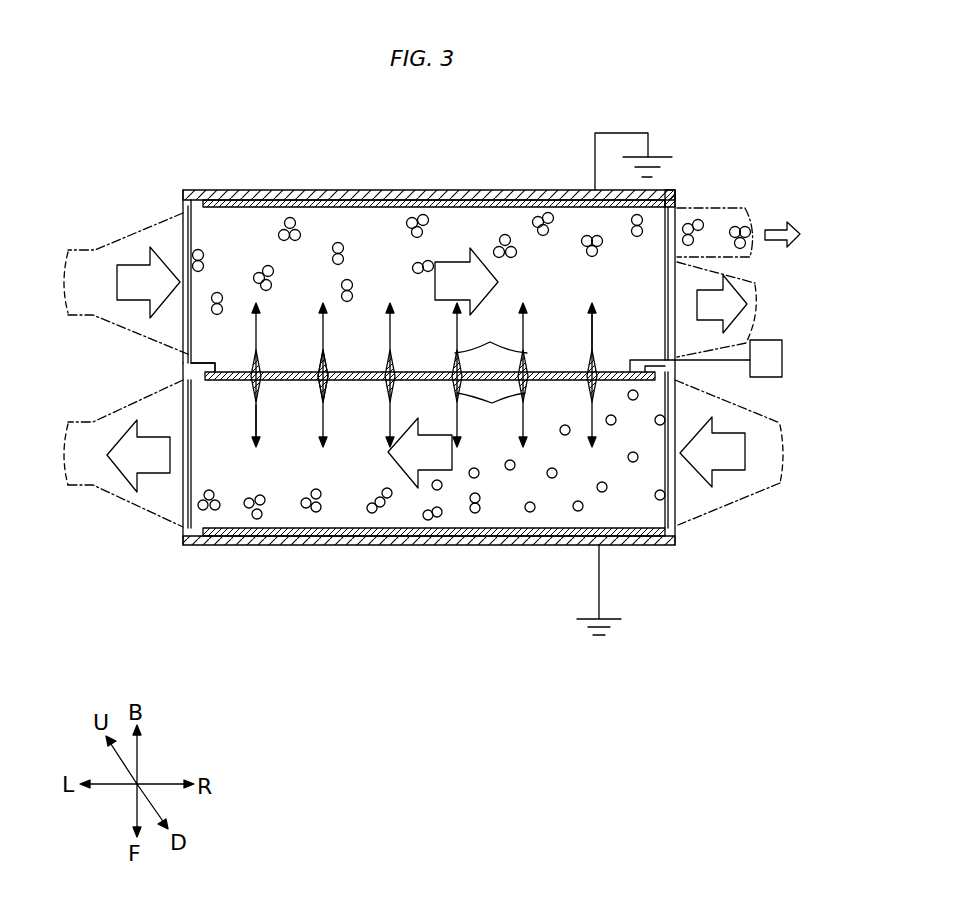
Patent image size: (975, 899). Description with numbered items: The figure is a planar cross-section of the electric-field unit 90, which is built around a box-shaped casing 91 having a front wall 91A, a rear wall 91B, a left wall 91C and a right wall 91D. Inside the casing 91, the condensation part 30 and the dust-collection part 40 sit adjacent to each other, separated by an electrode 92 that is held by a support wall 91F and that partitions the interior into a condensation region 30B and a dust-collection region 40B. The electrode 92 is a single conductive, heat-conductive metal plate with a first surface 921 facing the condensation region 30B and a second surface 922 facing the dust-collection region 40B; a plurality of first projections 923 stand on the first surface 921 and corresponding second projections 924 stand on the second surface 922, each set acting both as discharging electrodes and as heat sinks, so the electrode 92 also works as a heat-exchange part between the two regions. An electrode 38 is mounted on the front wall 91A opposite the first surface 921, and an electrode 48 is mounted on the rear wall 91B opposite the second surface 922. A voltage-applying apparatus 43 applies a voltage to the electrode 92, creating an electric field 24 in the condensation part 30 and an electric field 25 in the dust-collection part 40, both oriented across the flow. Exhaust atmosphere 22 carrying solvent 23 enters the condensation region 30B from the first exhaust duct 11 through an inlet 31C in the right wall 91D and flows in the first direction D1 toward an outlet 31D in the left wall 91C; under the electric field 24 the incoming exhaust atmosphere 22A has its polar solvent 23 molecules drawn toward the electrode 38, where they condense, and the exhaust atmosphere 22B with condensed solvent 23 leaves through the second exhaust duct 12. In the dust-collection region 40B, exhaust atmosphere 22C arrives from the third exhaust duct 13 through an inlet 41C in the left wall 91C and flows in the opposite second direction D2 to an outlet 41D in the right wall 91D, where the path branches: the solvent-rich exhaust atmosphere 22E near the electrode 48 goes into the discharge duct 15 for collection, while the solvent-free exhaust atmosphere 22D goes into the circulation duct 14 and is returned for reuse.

The first exhaust duct 11 is at (780, 448).
The second exhaust duct 12 is at (72, 488).
The third exhaust duct 13 is at (78, 247).
The circulation duct 14 is at (755, 288).
The discharge duct 15 is at (738, 208).
The exhaust atmosphere 22 is at (460, 332).
The exhaust atmosphere introduced into condensation part 22A is at (732, 430).
The exhaust atmosphere including condensed solvent 22B is at (139, 418).
The exhaust atmosphere introduced into dust-collection part 22C is at (130, 303).
The exhaust atmosphere from which solvent has been removed 22D is at (742, 300).
The exhaust atmosphere including concentrated solvent 22E is at (777, 219).
The solvent 23 is at (544, 237).
The electric field 24 is at (253, 425).
The electric field 25 is at (592, 327).
The condensation part 30 is at (440, 495).
The condensation region 30B is at (496, 530).
The inlet 31C is at (672, 523).
The outlet 31D is at (187, 527).
The electrode 38 is at (340, 528).
The dust-collection part 40 is at (412, 244).
The dust-collection region 40B is at (492, 215).
The inlet 41C is at (182, 212).
The outlet 41D is at (677, 214).
The voltage-applying apparatus 43 is at (753, 375).
The electrode 48 is at (362, 206).
The electric-field unit 90 is at (437, 162).
The casing 91 is at (435, 368).
The front wall 91A is at (365, 545).
The rear wall 91B is at (353, 192).
The left wall 91C is at (183, 535).
The right wall 91D is at (675, 538).
The support wall 91F is at (203, 360).
The electrode 92 is at (432, 372).
The first surface 921 is at (353, 381).
The second surface 922 is at (355, 372).
The first projections 923 is at (491, 415).
The second projections 924 is at (491, 335).
The first direction D1 is at (432, 440).
The second direction D2 is at (453, 264).